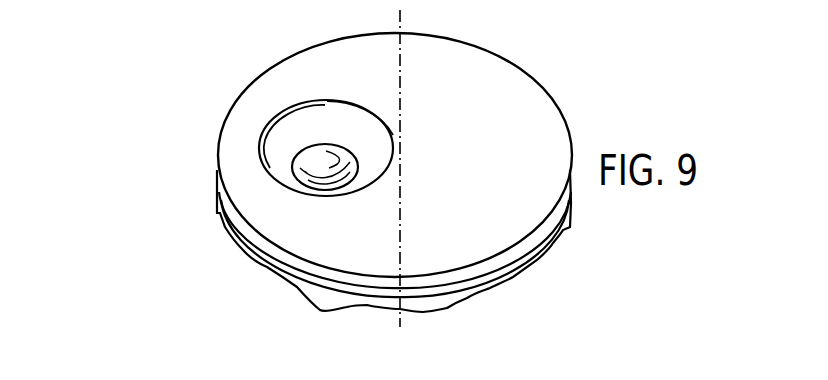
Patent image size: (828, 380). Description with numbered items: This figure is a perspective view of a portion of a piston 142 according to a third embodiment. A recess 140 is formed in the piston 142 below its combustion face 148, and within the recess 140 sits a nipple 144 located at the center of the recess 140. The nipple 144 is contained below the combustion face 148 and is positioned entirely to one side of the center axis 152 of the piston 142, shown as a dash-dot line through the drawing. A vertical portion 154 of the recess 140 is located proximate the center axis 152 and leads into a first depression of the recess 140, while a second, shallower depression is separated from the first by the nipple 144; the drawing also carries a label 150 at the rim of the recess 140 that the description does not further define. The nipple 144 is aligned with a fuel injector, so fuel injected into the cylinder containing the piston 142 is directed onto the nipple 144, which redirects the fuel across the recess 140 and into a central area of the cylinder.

The recess 140 is at (365, 80).
The piston 142 is at (325, 184).
The nipple 144 is at (325, 136).
The combustion face 148 is at (510, 184).
The bowl lip 150 is at (395, 135).
The center axis 152 is at (402, 320).
The vertical portion 154 is at (361, 137).